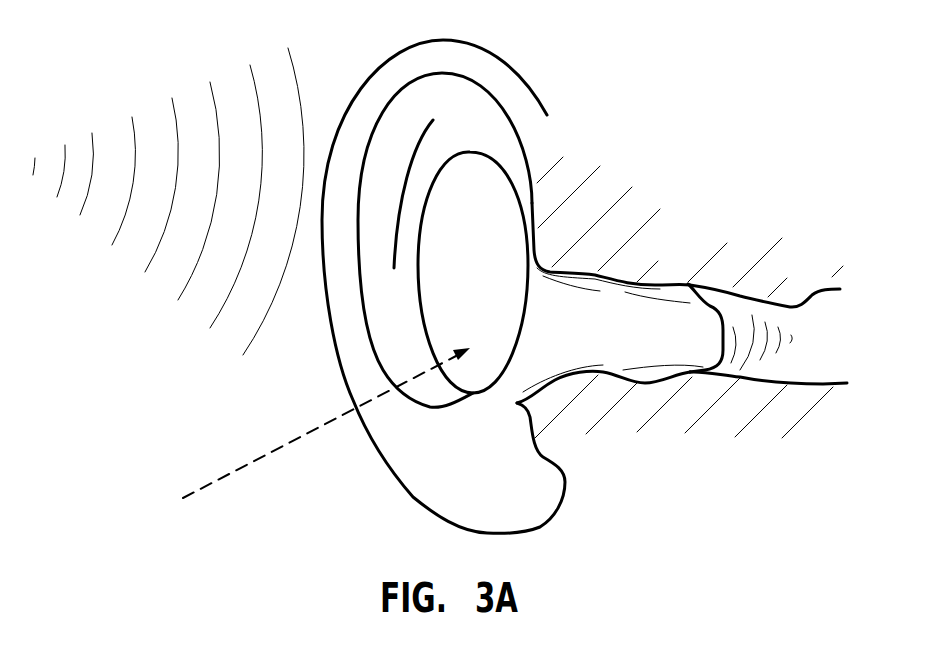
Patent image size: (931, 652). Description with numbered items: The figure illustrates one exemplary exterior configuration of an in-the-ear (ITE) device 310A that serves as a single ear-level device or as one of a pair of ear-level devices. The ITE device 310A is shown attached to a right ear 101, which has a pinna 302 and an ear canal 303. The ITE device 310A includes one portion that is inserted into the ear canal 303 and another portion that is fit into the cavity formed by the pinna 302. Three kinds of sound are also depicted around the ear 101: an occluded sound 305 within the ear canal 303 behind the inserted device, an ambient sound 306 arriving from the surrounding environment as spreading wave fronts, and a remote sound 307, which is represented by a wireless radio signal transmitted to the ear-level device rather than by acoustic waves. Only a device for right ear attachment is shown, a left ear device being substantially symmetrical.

The ear 101 is at (393, 497).
The pinna 302 is at (382, 430).
The ear canal 303 is at (808, 293).
The occluded sound 305 is at (752, 358).
The ambient sound 306 is at (255, 88).
The remote sound 307 is at (277, 450).
The in-the-ear (ITE) device 310A is at (662, 300).